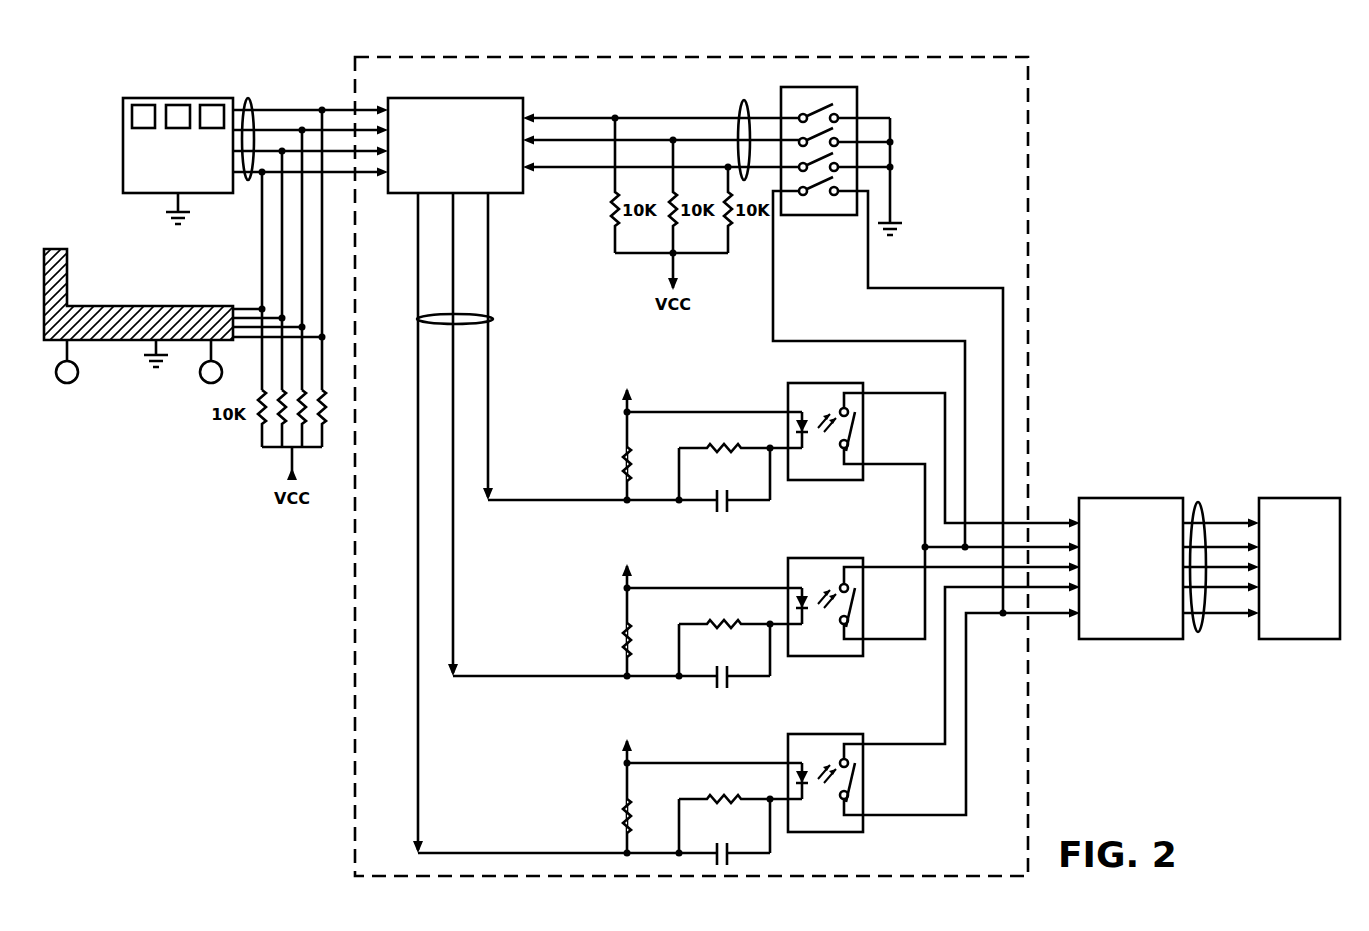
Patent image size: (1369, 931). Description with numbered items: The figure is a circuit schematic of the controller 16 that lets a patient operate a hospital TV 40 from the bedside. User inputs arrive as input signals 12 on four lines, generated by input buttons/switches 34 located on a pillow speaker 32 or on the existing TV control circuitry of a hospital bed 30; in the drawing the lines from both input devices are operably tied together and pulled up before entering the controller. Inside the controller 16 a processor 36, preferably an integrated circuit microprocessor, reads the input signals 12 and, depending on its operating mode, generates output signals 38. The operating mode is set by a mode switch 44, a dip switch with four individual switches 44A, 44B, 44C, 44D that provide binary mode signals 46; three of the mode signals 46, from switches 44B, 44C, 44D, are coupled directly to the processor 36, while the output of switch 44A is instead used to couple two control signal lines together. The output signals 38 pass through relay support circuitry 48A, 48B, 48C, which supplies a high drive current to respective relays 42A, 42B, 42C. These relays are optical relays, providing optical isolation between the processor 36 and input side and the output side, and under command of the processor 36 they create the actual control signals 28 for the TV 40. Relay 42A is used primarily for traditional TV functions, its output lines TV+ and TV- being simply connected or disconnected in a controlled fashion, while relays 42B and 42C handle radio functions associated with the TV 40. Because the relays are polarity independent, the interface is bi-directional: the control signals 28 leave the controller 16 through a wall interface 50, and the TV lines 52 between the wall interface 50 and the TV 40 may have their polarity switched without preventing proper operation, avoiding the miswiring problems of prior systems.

The input signals 12 is at (250, 104).
The controller 16 is at (1030, 158).
The control signals 28 is at (1199, 503).
The hospital bed 30 is at (142, 306).
The pillow speaker 32 is at (123, 162).
The input buttons/switches 34 is at (212, 104).
The processor 36 is at (455, 98).
The output signals 38 is at (418, 319).
The hospital TV 40 is at (1310, 498).
The relay 42A is at (810, 734).
The relay 42B is at (810, 558).
The relay 42C is at (810, 383).
The mode switch 44 is at (781, 107).
The individual switch 44A is at (832, 200).
The individual switch 44B is at (840, 177).
The individual switch 44C is at (840, 133).
The individual switch 44D is at (840, 111).
The mode signals 46 is at (740, 106).
The relay support circuitry 48A is at (714, 759).
The relay support circuitry 48B is at (714, 584).
The relay support circuitry 48C is at (714, 408).
The wall interface 50 is at (1150, 498).
The TV lines 52 is at (1224, 615).